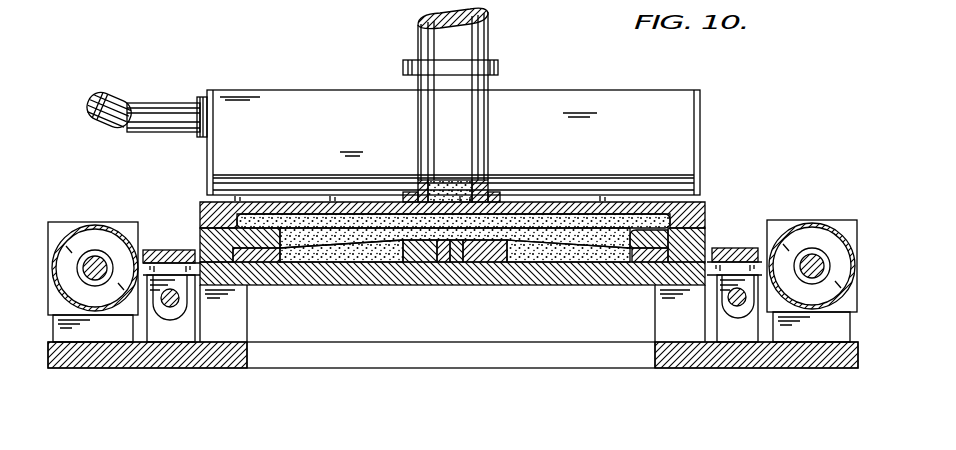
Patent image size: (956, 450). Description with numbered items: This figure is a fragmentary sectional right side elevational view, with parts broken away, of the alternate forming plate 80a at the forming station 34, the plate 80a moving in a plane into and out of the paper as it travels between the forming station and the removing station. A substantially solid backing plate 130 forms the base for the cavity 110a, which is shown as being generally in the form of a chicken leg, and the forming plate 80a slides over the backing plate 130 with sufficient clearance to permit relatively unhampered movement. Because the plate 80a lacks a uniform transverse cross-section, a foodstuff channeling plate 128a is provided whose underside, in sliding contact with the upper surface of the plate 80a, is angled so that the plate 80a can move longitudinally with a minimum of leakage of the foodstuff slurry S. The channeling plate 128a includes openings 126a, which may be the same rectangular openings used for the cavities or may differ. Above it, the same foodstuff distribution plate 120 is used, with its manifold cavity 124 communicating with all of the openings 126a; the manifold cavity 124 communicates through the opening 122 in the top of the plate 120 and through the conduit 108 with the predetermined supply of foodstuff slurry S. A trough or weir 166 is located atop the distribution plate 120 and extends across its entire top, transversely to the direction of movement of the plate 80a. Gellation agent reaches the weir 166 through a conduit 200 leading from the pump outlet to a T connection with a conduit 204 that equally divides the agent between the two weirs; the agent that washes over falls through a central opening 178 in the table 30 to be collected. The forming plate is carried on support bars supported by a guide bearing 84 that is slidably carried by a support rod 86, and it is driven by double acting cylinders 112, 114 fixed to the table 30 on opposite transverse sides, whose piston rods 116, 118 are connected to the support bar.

The table 30 is at (108, 360).
The forming station 34 is at (792, 120).
The forming plate 80a is at (268, 263).
The guide bearing 84 is at (718, 290).
The support rod 86 is at (730, 302).
The conduit 108 is at (475, 47).
The cavity 110a is at (333, 252).
The double acting cylinder 112 is at (119, 240).
The double acting cylinder 114 is at (793, 233).
The piston rod 116 is at (95, 265).
The piston rod 118 is at (812, 262).
The foodstuff distribution plate 120 is at (706, 212).
The opening 122 is at (466, 200).
The foodstuff distribution manifold cavity 124 is at (545, 215).
The opening 126a is at (622, 238).
The foodstuff channeling plate 128a is at (706, 243).
The backing plate 130 is at (300, 270).
The weir 166 is at (592, 93).
The central opening 178 is at (250, 356).
The conduit 200 is at (107, 118).
The conduit 204 is at (163, 110).
The foodstuff slurry S is at (437, 183).